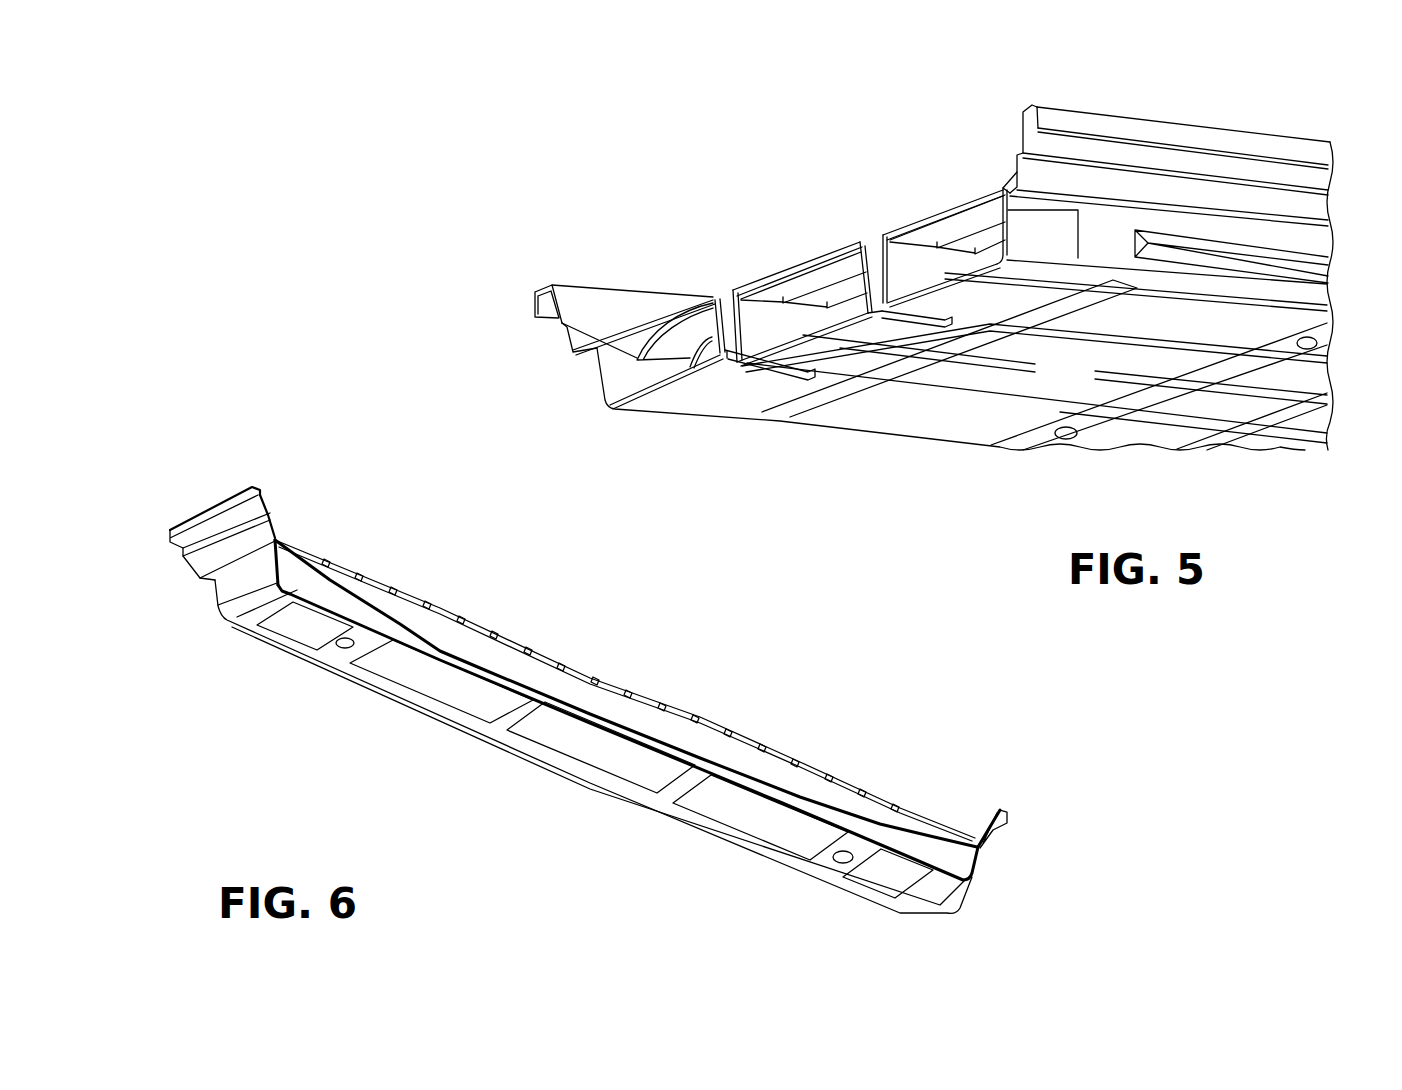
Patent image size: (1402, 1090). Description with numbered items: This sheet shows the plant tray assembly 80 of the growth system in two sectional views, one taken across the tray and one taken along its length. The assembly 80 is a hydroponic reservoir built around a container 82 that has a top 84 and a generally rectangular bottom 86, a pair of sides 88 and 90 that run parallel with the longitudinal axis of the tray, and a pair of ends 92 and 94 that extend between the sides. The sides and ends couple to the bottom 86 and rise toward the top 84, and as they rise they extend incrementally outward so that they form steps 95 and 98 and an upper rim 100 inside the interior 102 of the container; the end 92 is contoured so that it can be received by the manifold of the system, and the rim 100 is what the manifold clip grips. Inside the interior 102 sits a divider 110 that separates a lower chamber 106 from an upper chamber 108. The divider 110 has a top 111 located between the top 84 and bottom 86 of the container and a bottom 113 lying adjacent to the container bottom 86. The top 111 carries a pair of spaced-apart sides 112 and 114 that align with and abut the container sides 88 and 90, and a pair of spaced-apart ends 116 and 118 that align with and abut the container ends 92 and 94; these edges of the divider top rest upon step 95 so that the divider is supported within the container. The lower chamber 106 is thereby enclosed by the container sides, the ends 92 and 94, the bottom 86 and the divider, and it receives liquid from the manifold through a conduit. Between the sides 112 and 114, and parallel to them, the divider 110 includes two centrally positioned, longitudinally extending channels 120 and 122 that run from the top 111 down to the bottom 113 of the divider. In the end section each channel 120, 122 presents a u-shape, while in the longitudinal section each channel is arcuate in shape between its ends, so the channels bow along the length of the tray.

In FIG. 5, the plant tray assembly 80 is at (1340, 122).
In FIG. 6, the plant tray assembly 80 is at (483, 707).
In FIG. 5, the container 82 is at (1217, 125).
In FIG. 6, the container 82 is at (1003, 818).
In FIG. 5, the top 84 is at (1100, 95).
In FIG. 6, the top 84 is at (554, 628).
In FIG. 5, the bottom 86 is at (1046, 386).
In FIG. 6, the bottom 86 is at (614, 765).
In FIG. 5, the side 88 is at (1185, 205).
In FIG. 6, the side 90 is at (310, 665).
In FIG. 6, the end 92 is at (250, 570).
In FIG. 6, the end 94 is at (975, 868).
In FIG. 5, the step 95 is at (581, 335).
In FIG. 6, the step 95 is at (280, 538).
In FIG. 5, the step 98 is at (536, 304).
In FIG. 5, the upper rim 100 is at (541, 283).
In FIG. 5, the interior 102 is at (632, 245).
In FIG. 6, the interior 102 is at (758, 712).
In FIG. 5, the lower chamber 106 is at (653, 375).
In FIG. 6, the lower chamber 106 is at (962, 868).
In FIG. 5, the upper chamber 108 is at (975, 135).
In FIG. 6, the upper chamber 108 is at (684, 693).
In FIG. 5, the divider 110 is at (793, 255).
In FIG. 6, the divider 110 is at (621, 681).
In FIG. 5, the top 111 is at (946, 205).
In FIG. 6, the top 111 is at (397, 594).
In FIG. 5, the side 112 is at (1010, 193).
In FIG. 5, the bottom 113 is at (732, 365).
In FIG. 6, the bottom 113 is at (467, 660).
In FIG. 5, the side 114 is at (578, 345).
In FIG. 6, the end 116 is at (288, 542).
In FIG. 6, the end 118 is at (978, 845).
In FIG. 5, the channel 120 is at (723, 300).
In FIG. 6, the channel 120 is at (495, 655).
In FIG. 5, the channel 122 is at (876, 237).